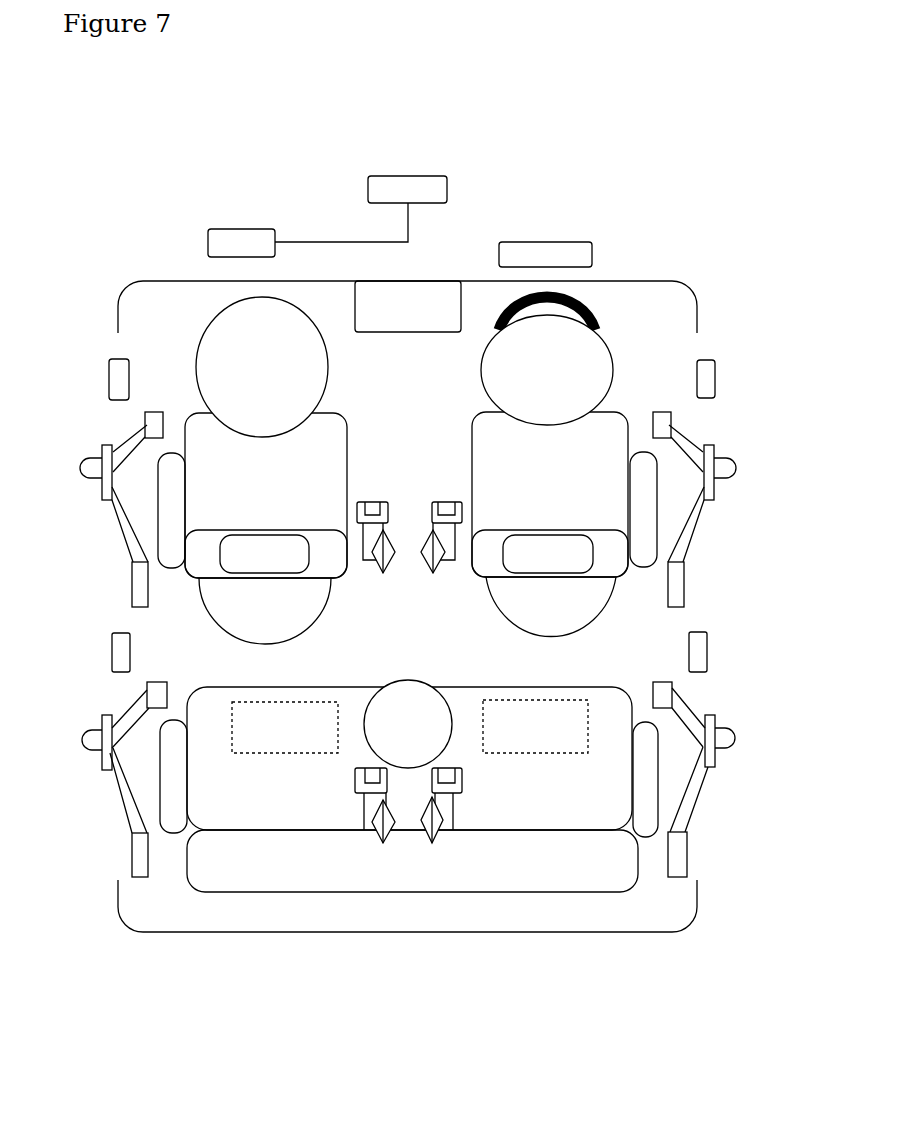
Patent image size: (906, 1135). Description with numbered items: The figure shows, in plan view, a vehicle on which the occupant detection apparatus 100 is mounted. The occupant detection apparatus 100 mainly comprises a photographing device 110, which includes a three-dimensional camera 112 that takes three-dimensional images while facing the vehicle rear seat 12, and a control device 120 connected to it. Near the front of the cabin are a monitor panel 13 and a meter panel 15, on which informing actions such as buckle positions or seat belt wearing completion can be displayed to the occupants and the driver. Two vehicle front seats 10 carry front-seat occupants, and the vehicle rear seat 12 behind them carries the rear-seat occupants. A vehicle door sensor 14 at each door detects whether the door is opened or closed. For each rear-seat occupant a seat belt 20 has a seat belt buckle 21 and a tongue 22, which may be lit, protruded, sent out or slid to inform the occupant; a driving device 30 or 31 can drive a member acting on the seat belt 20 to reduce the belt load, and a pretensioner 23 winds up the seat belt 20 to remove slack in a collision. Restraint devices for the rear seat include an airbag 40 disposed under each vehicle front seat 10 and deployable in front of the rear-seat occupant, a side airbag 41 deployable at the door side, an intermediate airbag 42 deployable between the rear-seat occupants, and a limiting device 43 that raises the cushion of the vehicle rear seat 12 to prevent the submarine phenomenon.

The occupant detection apparatus 100 is at (313, 125).
The photographing device 110 is at (390, 176).
The 3D camera 112 is at (418, 175).
The control device 120 is at (222, 228).
The meter panel 15 is at (556, 241).
The monitor panel 13 is at (434, 280).
The vehicle front seat 10 is at (190, 411).
The airbag 40 is at (333, 602).
The vehicle door sensor 14 is at (111, 650).
The vehicle rear seat 12 is at (637, 886).
The limiting device 43 is at (480, 706).
The intermediate airbag 42 is at (366, 736).
The side airbag 41 is at (158, 801).
The seat belt buckle 21 is at (354, 791).
The driving device 31 is at (431, 846).
The seat belt 20 is at (130, 705).
The driving device 30 is at (101, 763).
The tongue 22 is at (90, 740).
The pretensioner 23 is at (135, 863).